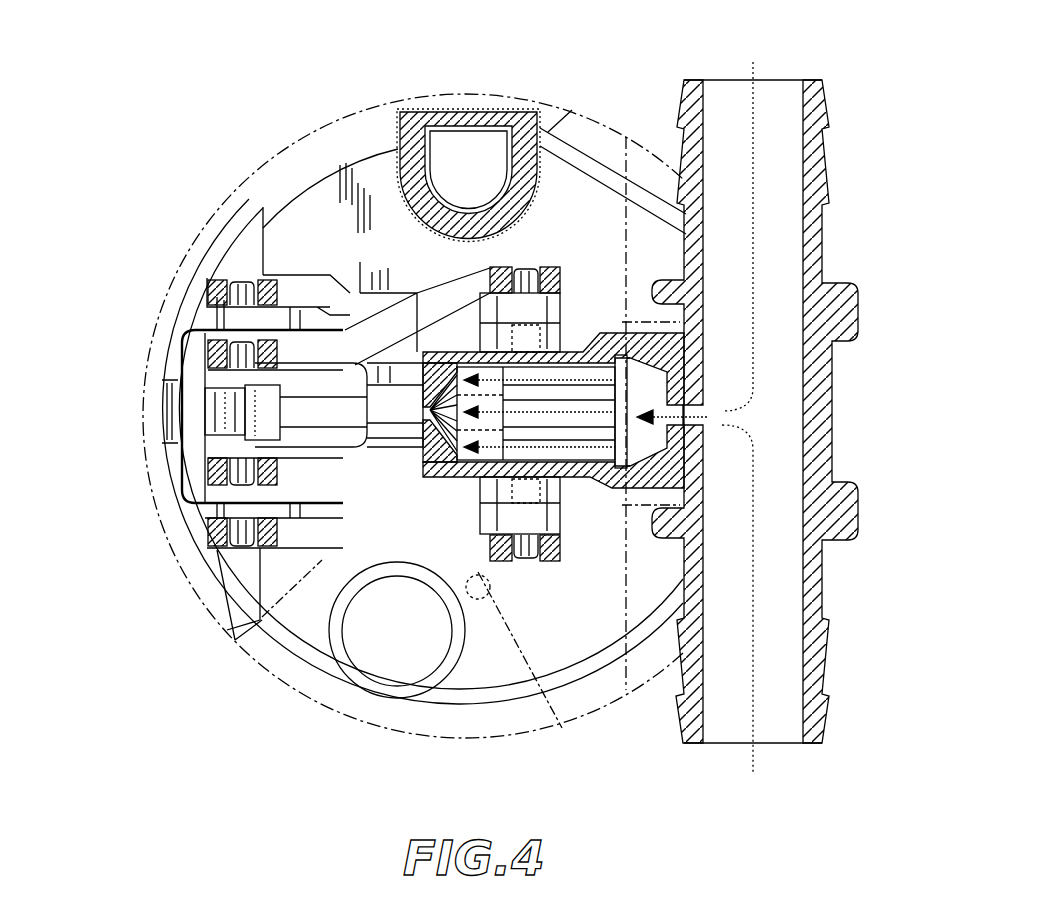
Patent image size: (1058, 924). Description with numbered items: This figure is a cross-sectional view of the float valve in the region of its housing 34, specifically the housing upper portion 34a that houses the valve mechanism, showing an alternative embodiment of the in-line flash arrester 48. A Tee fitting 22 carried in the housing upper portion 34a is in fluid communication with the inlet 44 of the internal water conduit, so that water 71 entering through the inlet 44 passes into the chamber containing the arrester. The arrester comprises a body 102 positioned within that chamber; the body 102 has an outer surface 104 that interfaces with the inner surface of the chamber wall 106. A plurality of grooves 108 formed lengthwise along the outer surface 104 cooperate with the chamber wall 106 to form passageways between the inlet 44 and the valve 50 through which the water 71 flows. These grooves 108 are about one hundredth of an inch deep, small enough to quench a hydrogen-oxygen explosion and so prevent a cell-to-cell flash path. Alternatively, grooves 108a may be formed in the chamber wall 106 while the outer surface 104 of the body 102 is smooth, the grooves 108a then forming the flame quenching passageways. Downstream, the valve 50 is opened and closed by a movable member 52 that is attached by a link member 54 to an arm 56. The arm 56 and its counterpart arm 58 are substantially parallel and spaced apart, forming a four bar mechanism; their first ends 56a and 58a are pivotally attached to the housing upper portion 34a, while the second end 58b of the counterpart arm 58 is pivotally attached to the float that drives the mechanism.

The Tee fitting 22 is at (788, 228).
The housing 34 is at (187, 582).
The housing upper portion 34a is at (573, 717).
The inlet 44 is at (708, 421).
The flash arrester 48 is at (617, 432).
The valve 50 is at (433, 593).
The movable member 52 is at (443, 387).
The link member 54 is at (377, 370).
The arm 56 is at (290, 290).
The first end of arm 56a is at (240, 280).
The counterpart arm 58 is at (460, 283).
The first end of counterpart arm 58a is at (232, 345).
The second end of counterpart arm 58b is at (524, 282).
The water 71 is at (753, 95).
The body 102 is at (572, 433).
The outer surface 104 is at (552, 438).
The chamber wall 106 is at (493, 588).
The grooves 108 is at (641, 403).
The grooves 108a is at (452, 410).